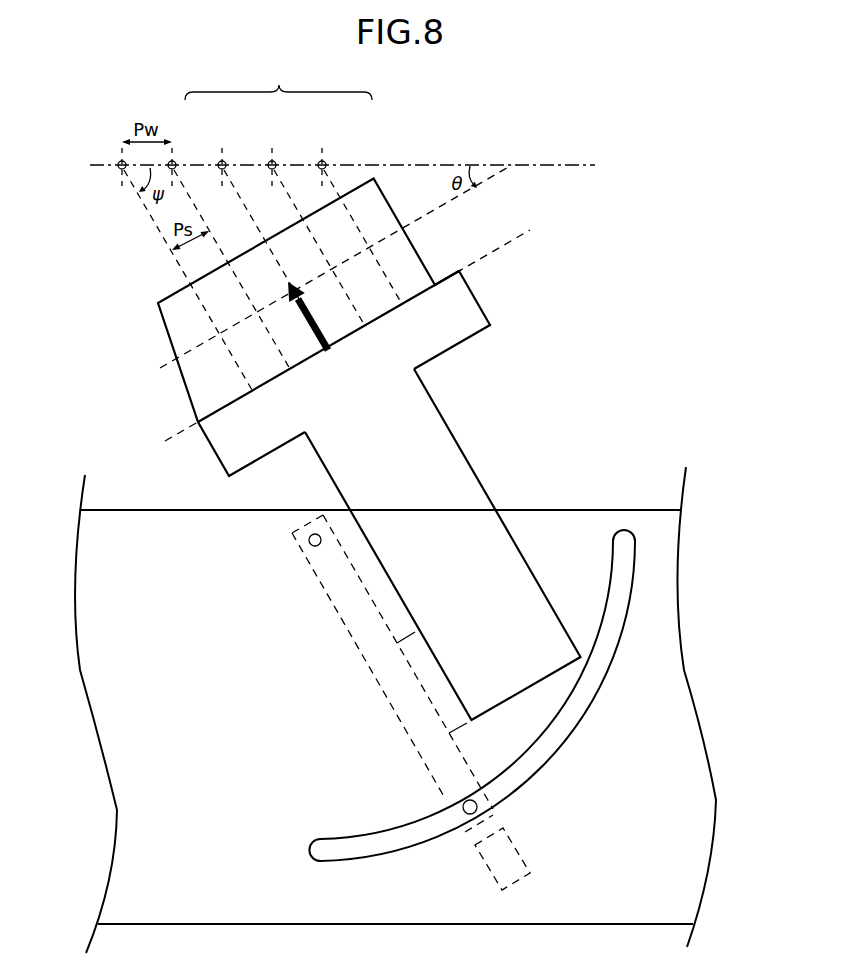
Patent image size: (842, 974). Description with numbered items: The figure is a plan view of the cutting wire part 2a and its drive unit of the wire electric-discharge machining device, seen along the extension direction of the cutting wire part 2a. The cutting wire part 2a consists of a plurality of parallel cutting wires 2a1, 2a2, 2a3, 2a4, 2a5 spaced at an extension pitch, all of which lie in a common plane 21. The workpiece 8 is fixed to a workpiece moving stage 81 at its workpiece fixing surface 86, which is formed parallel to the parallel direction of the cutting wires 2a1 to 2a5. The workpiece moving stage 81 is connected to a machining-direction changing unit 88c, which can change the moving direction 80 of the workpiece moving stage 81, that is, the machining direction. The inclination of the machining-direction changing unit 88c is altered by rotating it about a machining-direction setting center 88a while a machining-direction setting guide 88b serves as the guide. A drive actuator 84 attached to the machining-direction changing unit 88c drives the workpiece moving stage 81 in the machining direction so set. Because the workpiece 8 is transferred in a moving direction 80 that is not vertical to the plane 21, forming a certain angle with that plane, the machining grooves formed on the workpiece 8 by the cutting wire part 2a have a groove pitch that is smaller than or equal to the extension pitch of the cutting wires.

The cutting wire part 2a is at (278, 81).
The cutting wire 2a1 is at (117, 166).
The cutting wire 2a2 is at (174, 162).
The cutting wire 2a3 is at (224, 162).
The cutting wire 2a4 is at (274, 162).
The cutting wire 2a5 is at (324, 162).
The plane including the cutting wires 21 is at (431, 163).
The workpiece 8 is at (166, 318).
The moving direction 80 is at (305, 326).
The workpiece moving stage 81 is at (425, 422).
The workpiece fixing surface 86 is at (509, 243).
The machining-direction setting center 88a is at (308, 543).
The machining-direction setting guide 88b is at (637, 568).
The machining-direction changing unit 88c is at (423, 692).
The drive actuator 84 is at (517, 882).